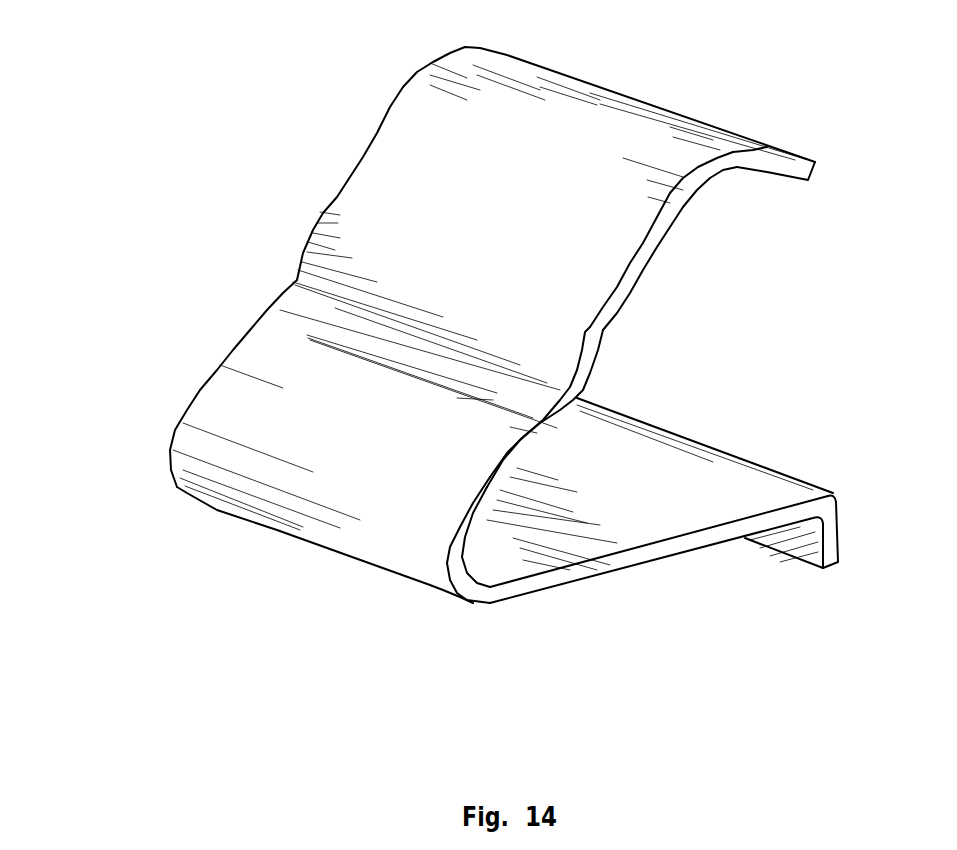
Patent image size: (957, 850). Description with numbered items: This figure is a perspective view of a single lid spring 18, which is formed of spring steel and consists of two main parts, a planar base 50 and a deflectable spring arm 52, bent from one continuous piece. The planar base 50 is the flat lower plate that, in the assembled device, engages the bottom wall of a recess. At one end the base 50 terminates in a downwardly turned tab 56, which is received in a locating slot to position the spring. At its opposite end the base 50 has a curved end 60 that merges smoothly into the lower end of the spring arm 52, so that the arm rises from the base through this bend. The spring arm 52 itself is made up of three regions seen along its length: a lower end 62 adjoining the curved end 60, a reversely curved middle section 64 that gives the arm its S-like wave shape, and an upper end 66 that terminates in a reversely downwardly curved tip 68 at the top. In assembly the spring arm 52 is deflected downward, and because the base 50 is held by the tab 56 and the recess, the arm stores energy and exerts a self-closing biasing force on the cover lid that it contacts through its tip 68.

The spring 18 is at (287, 91).
The planar base 50 is at (613, 563).
The spring arm 52 is at (647, 273).
The downwardly turned tab 56 is at (832, 565).
The curved end 60 is at (458, 577).
The lower end 62 is at (272, 402).
The reversely curved middle section 64 is at (308, 313).
The upper end 66 is at (393, 163).
The reversely downwardly curved tip 68 is at (730, 165).